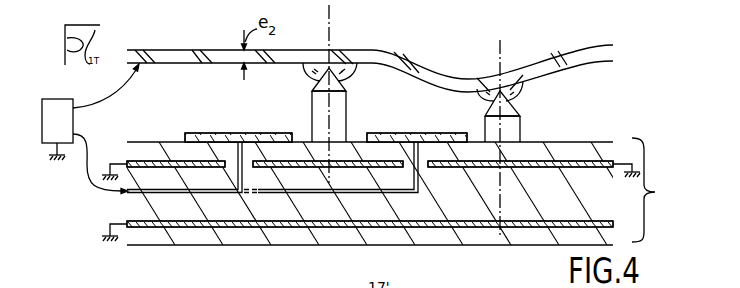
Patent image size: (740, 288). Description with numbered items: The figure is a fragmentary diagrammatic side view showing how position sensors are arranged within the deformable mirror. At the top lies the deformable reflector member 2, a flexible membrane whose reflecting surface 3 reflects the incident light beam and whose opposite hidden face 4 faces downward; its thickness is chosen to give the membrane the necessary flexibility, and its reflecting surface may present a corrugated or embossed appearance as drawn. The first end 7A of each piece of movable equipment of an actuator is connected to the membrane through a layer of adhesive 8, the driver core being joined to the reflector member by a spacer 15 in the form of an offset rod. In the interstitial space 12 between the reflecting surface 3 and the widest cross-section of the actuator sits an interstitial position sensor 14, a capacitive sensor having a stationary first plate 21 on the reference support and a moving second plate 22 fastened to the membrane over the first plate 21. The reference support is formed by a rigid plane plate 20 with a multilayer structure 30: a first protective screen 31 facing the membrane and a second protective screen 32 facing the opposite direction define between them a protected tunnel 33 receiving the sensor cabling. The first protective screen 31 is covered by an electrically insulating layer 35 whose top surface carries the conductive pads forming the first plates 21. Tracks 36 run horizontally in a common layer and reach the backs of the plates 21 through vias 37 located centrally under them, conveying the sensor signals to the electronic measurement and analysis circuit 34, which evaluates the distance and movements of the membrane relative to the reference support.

The deformable reflector member 2 is at (213, 50).
The reflecting surface 3 is at (164, 45).
The hidden face 4 is at (172, 70).
The first end of movable equipment 7A is at (356, 79).
The layer of adhesive 8 is at (341, 66).
The interstitial space 12 is at (608, 96).
The interstitial position sensor 14 is at (288, 124).
The spacer 15 is at (336, 111).
The plate 20 is at (527, 207).
The first plate 21 is at (244, 133).
The second plate 22 is at (292, 57).
The multilayer structure 30 is at (633, 140).
The first protective screen 31 is at (147, 142).
The second protective screen 32 is at (178, 228).
The protected tunnel 33 is at (562, 200).
The electronic measurement and analysis circuit 34 is at (67, 130).
The electrically insulating layer 35 is at (566, 141).
The tracks 36 is at (197, 196).
The vias 37 is at (229, 153).